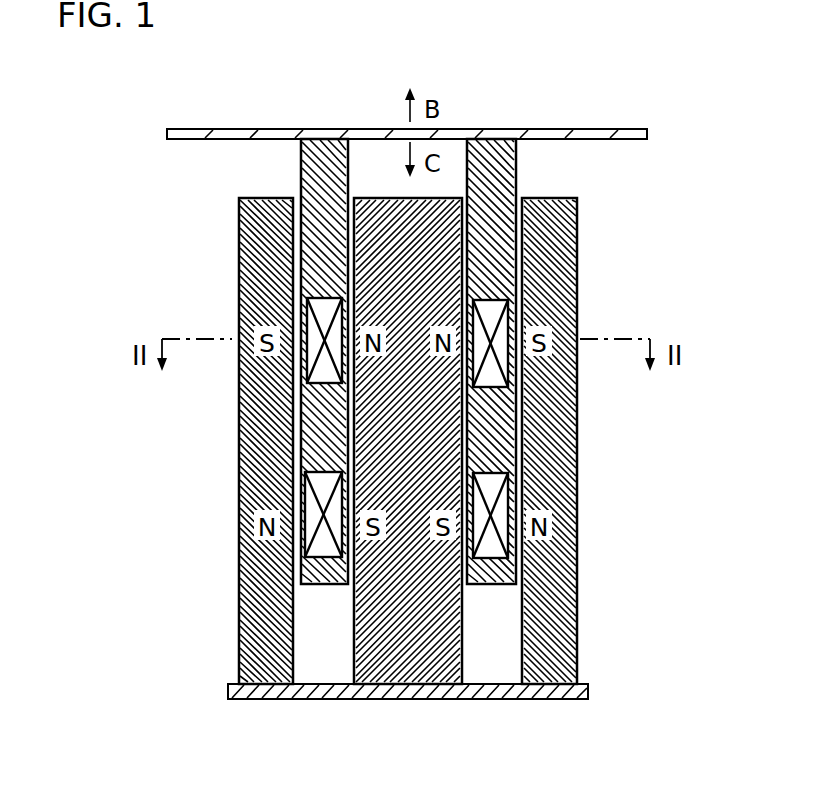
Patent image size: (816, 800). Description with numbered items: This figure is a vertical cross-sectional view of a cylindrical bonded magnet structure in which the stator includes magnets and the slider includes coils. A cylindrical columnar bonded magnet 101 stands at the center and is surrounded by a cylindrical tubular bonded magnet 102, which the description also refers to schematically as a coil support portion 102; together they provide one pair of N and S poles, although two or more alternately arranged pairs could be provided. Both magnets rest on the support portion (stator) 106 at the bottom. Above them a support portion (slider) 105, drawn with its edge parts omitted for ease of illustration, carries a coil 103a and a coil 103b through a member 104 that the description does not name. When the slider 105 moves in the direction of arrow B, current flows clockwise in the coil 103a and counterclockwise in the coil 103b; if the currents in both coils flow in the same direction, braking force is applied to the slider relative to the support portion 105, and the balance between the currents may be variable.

The cylindrical columnar bonded magnet 101 is at (407, 612).
The cylindrical tubular bonded magnet 102 is at (545, 258).
The coil 103a is at (490, 377).
The coil 103b is at (490, 478).
The movable member / mover 104 is at (490, 178).
The support portion (slider) 105 is at (292, 132).
The support portion (stator) 106 is at (228, 690).